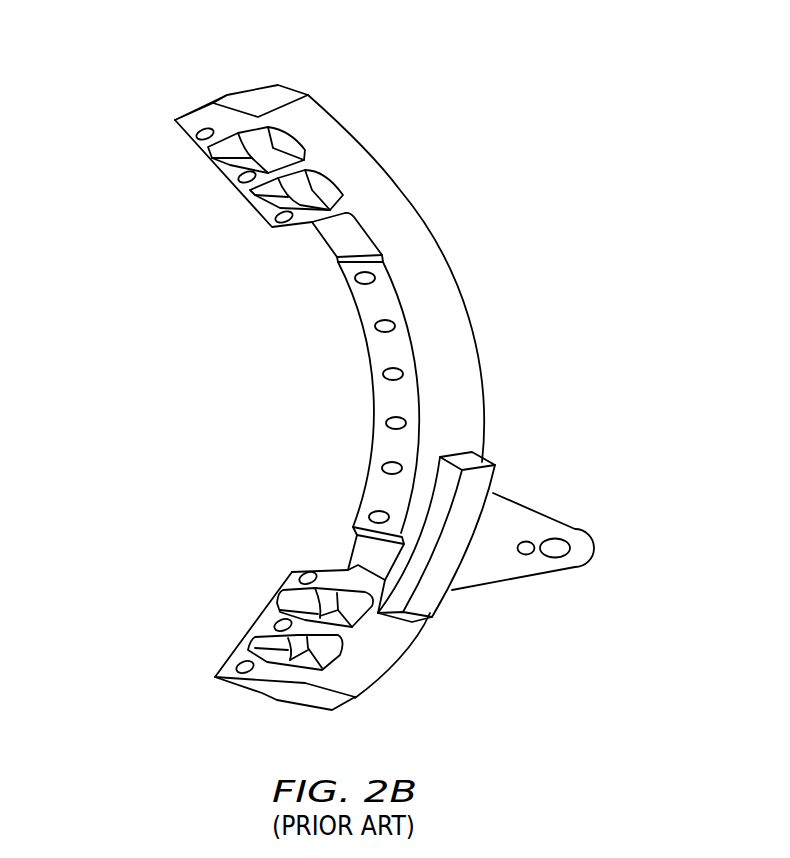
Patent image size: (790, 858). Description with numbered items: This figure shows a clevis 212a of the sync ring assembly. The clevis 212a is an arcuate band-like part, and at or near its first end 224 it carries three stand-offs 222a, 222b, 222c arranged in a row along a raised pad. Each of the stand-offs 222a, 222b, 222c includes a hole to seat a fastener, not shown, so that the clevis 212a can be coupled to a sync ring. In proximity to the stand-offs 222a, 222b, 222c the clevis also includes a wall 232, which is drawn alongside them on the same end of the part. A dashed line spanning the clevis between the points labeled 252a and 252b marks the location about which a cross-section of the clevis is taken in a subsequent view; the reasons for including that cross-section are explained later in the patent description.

The clevis 212a is at (356, 364).
The first end 224 is at (263, 94).
The stand-off 222a is at (202, 135).
The stand-off 222b is at (243, 180).
The stand-off 222c is at (282, 223).
The wall 232 is at (206, 145).
The section line end 252a is at (553, 344).
The section line end 252b is at (553, 344).